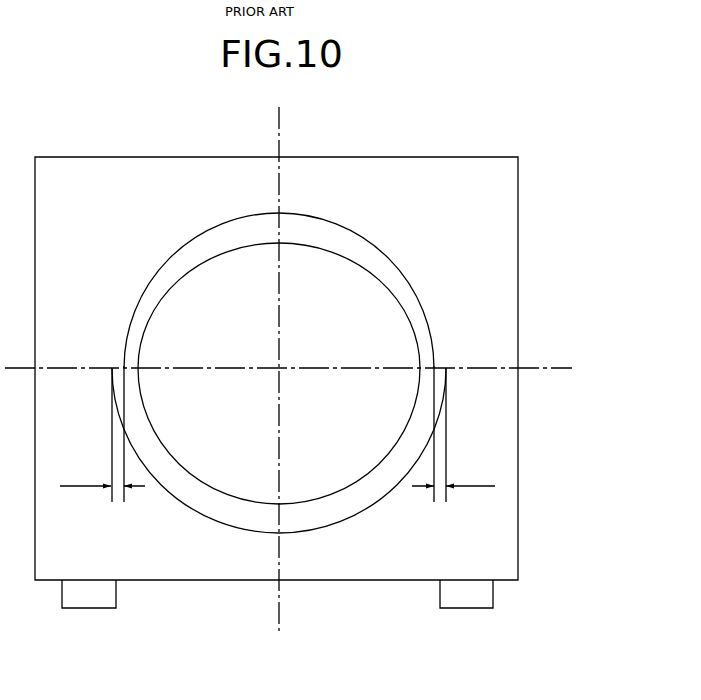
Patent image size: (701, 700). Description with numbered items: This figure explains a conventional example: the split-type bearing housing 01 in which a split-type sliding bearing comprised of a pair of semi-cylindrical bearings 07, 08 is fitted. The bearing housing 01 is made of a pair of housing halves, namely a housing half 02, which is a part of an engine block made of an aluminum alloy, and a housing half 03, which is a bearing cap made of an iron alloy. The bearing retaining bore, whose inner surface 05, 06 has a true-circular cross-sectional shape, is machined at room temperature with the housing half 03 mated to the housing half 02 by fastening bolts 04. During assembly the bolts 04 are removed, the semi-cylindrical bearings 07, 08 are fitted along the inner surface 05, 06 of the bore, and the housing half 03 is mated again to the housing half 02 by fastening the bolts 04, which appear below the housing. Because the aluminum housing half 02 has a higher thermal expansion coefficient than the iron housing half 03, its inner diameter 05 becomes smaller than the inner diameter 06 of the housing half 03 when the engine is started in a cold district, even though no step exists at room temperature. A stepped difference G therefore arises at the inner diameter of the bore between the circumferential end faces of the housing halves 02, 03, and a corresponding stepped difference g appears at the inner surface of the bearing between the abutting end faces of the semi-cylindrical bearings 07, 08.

The bearing housing 01 is at (311, 372).
The housing half 02 is at (507, 262).
The housing half 03 is at (508, 528).
The bolts 04 is at (88, 600).
The inner surface of bearing retaining bore 05 is at (143, 291).
The inner surface of bearing retaining bore 06 is at (192, 502).
The semi-cylindrical bearing 07 is at (363, 253).
The semi-cylindrical bearing 08 is at (367, 500).
The stepped difference G is at (277, 434).
The step at parting line g is at (133, 370).